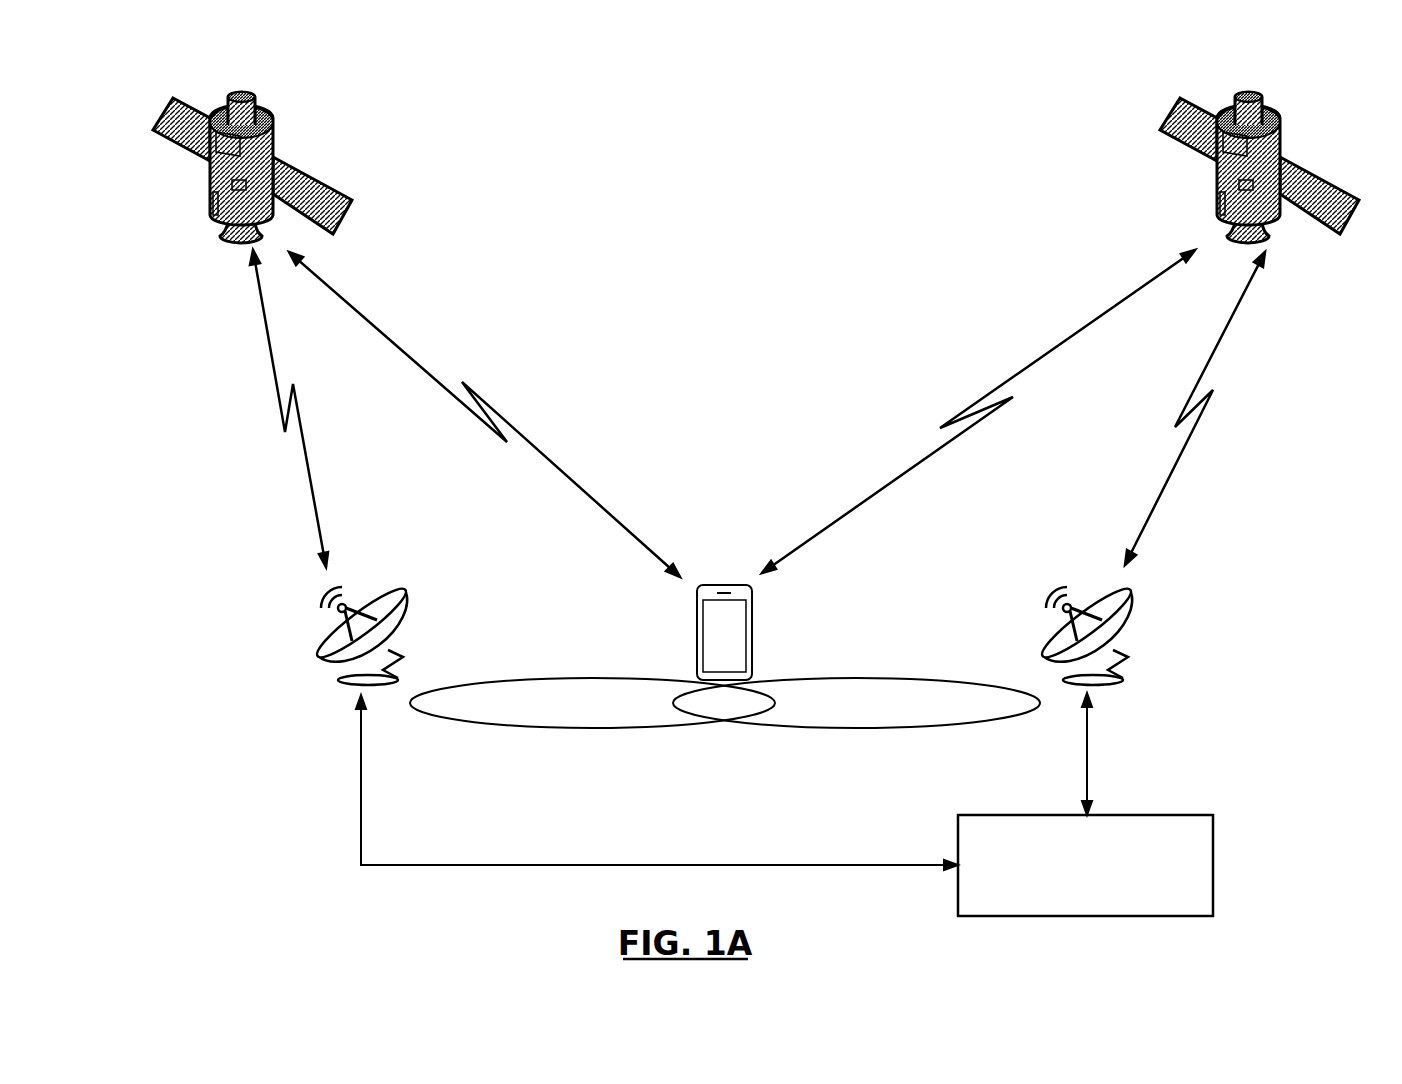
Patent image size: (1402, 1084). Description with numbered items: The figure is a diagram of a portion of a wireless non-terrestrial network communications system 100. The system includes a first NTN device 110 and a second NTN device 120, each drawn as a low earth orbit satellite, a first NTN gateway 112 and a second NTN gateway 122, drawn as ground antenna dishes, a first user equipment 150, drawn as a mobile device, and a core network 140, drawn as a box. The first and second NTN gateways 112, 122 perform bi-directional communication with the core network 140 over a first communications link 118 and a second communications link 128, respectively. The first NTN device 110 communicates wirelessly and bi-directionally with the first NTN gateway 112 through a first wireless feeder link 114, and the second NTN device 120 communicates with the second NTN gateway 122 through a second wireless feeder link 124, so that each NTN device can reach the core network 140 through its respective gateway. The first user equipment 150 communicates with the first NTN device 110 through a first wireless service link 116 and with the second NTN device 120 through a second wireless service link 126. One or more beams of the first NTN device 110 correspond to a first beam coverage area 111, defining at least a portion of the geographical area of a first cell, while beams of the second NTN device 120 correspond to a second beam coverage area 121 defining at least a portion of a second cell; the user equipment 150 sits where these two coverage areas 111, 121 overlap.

The wireless NTN communications system 100 is at (110, 63).
The first NTN device 110 is at (275, 156).
The second NTN device 120 is at (1178, 149).
The first NTN gateway 112 is at (400, 627).
The second NTN gateway 122 is at (1130, 625).
The first user equipment 150 is at (750, 630).
The first beam coverage area 111 is at (592, 703).
The second beam coverage area 121 is at (856, 703).
The first wireless feeder link 114 is at (265, 408).
The first wireless service link 116 is at (484, 414).
The second wireless feeder link 124 is at (1198, 408).
The second wireless service link 126 is at (978, 411).
The first communications link 118 is at (657, 782).
The second communications link 128 is at (1053, 754).
The core network 140 is at (1117, 815).